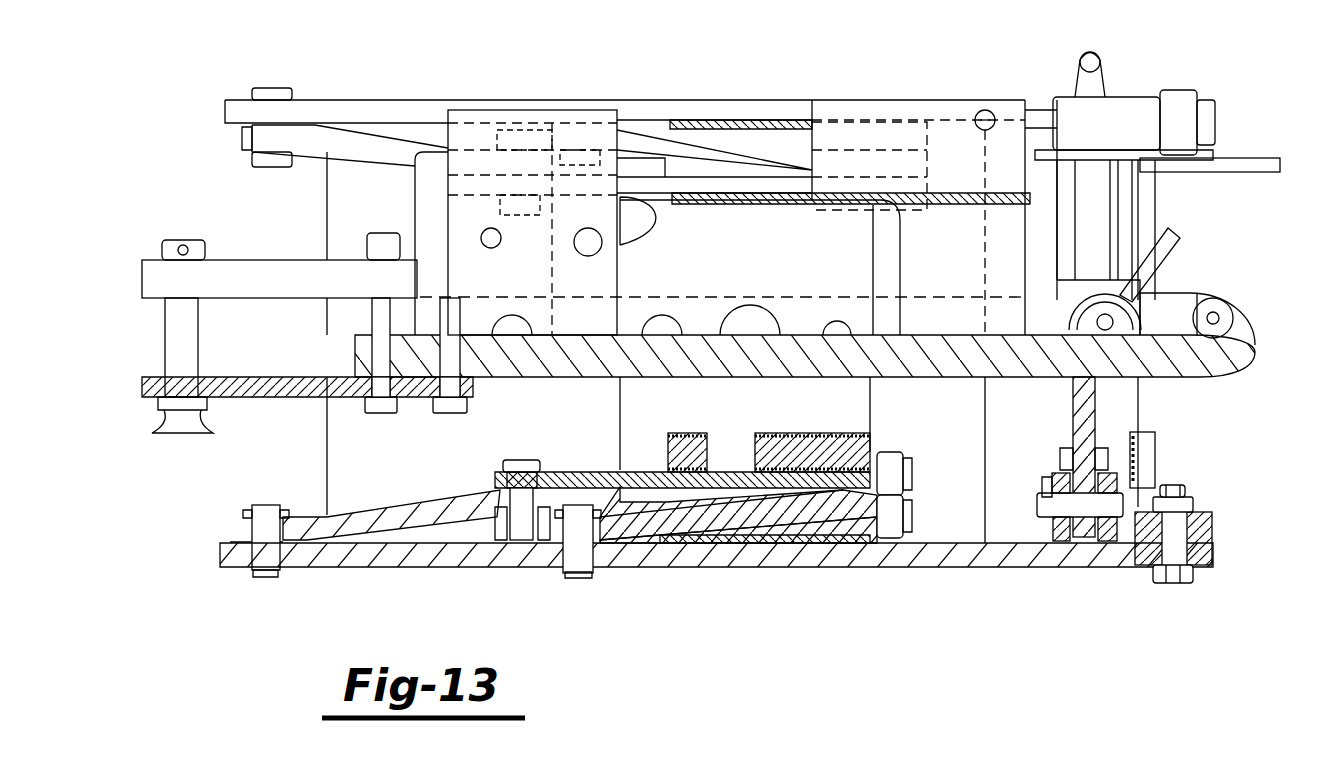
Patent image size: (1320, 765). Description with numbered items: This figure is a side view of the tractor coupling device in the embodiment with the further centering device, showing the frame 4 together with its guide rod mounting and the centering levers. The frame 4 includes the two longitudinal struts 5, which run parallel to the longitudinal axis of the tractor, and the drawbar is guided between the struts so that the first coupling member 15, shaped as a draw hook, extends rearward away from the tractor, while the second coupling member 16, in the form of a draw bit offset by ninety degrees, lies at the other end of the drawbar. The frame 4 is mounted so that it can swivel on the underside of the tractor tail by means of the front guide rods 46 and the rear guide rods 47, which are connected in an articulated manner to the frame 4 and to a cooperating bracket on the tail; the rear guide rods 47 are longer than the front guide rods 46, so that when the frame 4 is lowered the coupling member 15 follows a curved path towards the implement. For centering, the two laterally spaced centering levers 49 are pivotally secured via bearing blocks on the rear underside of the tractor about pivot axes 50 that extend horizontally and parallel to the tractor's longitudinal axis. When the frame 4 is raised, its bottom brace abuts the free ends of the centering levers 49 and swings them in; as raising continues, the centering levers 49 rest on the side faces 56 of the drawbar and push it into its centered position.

The frame 4 is at (837, 237).
The longitudinal strut 5 is at (667, 116).
The first coupling member 15 is at (1230, 322).
The second coupling member 16 is at (168, 277).
The front guide rod 46 is at (372, 155).
The rear guide rod 47 is at (750, 153).
The centering lever 49 is at (1088, 420).
The pivot axis 50 is at (1100, 504).
The side face 56 is at (1093, 397).